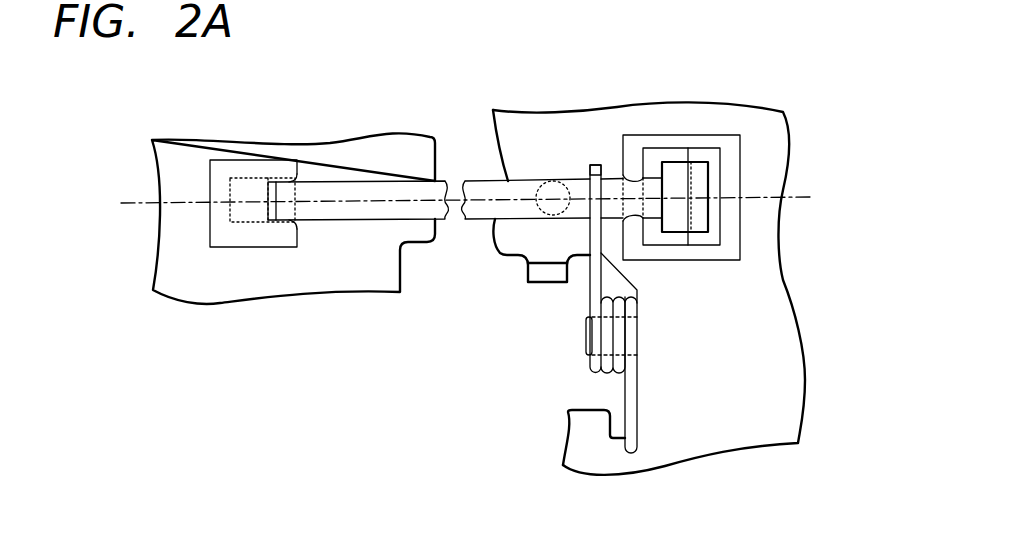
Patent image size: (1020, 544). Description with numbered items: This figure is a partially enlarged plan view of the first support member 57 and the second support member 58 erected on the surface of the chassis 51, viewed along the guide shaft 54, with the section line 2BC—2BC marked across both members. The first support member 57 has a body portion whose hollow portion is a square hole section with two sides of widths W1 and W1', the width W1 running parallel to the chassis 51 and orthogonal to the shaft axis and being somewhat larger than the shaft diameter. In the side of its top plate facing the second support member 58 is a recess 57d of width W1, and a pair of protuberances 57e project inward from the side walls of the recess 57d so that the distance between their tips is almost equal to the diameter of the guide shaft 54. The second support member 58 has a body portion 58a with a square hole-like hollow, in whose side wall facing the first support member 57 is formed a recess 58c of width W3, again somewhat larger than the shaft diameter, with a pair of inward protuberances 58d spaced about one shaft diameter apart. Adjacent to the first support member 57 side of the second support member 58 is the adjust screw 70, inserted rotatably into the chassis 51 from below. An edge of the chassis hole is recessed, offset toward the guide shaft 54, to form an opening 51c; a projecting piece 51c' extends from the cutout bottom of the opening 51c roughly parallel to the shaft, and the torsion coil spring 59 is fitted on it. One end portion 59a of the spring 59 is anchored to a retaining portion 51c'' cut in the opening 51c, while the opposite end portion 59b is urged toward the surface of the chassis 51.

The chassis 51 is at (478, 302).
The opening 51c is at (551, 391).
The projecting piece 51c' is at (572, 336).
The retaining portion 51c'' is at (565, 437).
The guide shaft 54 is at (413, 213).
The first support member 57 is at (263, 190).
The recess 57d is at (273, 218).
The protuberances 57e is at (288, 177).
The second support member 58 is at (645, 219).
The body portion 58a is at (705, 253).
The recess 58c is at (598, 288).
The protuberances 58d is at (637, 173).
The torsion coil spring 59 is at (598, 284).
The one end portion 59a is at (630, 414).
The opposite end portion 59b is at (597, 166).
The adjust screw 70 is at (542, 184).
The width W1 is at (342, 183).
The width W1' is at (251, 138).
The width W3 is at (612, 179).
The section line 2BC— 2BC is at (121, 170).